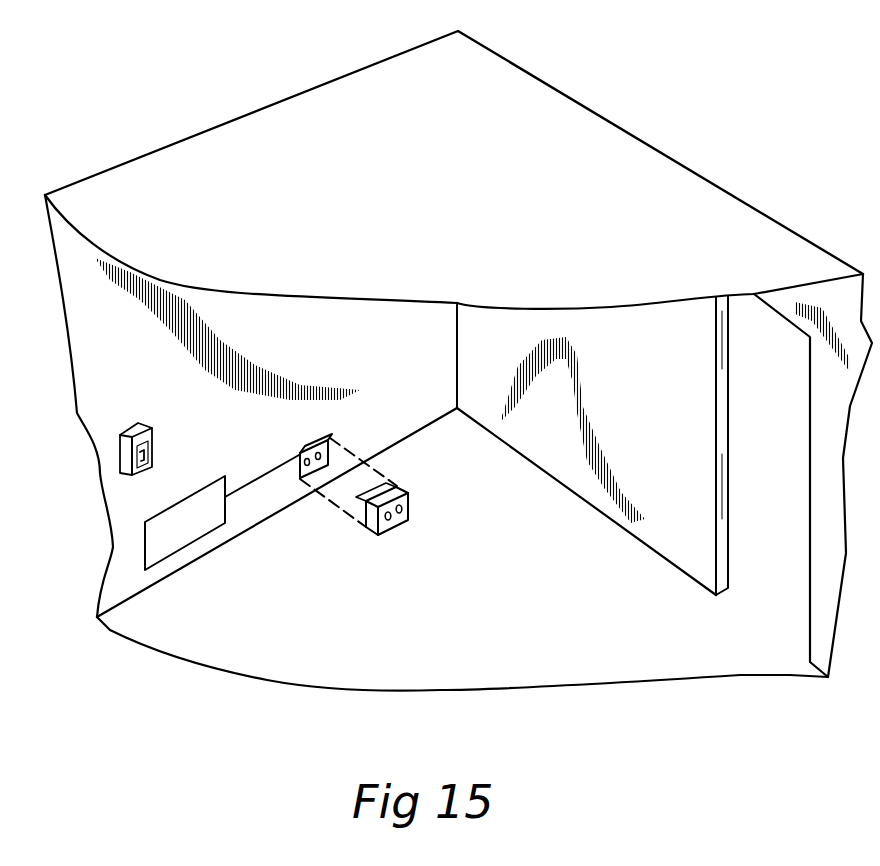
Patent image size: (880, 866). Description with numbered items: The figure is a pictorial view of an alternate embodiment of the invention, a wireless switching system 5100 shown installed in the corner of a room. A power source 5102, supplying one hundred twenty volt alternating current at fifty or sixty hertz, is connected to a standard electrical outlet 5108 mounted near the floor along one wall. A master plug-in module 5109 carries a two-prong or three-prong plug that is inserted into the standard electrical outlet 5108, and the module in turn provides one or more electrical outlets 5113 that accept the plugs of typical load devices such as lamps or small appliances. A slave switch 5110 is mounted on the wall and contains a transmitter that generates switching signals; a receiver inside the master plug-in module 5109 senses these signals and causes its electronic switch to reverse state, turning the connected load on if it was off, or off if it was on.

The wireless switching system 5100 is at (627, 110).
The power source 5102 is at (190, 489).
The standard electrical outlet 5108 is at (330, 445).
The master plug-in module 5109 is at (420, 525).
The slave switch 5110 is at (155, 438).
The electrical outlets 5113 is at (397, 528).